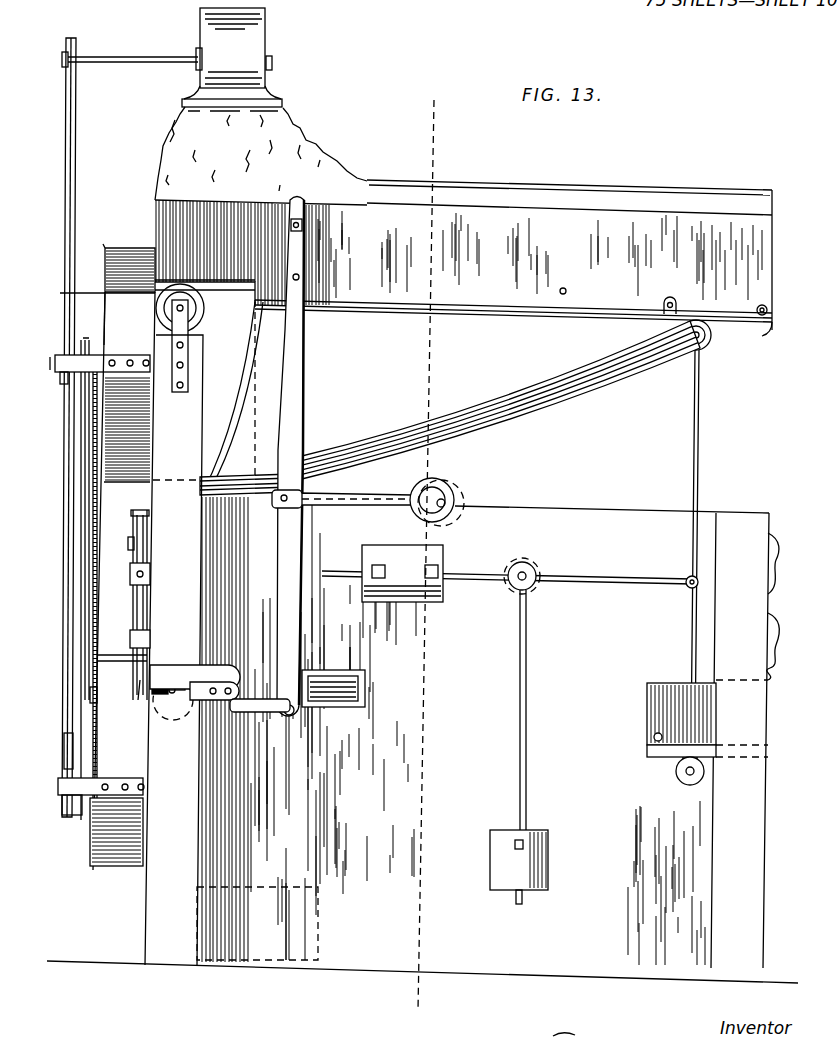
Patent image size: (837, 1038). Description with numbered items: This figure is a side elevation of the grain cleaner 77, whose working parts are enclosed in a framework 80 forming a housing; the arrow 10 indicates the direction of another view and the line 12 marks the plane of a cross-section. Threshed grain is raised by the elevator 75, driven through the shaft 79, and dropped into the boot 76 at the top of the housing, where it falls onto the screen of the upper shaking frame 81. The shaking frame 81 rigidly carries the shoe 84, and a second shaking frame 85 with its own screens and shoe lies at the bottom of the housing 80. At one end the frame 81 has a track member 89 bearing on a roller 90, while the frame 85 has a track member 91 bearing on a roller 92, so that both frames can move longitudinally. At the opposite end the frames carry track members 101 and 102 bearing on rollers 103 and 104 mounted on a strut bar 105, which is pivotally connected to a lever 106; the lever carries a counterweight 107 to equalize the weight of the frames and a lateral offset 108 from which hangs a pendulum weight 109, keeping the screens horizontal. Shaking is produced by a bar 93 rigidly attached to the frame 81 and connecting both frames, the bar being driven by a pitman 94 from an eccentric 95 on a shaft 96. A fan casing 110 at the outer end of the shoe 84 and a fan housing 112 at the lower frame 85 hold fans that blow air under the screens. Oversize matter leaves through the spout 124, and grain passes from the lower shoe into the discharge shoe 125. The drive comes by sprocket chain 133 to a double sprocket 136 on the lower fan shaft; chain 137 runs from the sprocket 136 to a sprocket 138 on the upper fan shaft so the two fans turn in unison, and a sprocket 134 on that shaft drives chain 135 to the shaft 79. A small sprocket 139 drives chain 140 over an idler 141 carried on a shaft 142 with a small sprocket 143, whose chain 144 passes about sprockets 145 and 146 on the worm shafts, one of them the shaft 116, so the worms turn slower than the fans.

The direction arrow 10 is at (80, 903).
The section line 12 is at (415, 1005).
The elevator 75 is at (266, 16).
The boot 76 is at (265, 218).
The cleaner 77 is at (548, 190).
The shaft 79 is at (128, 60).
The framework 80 is at (143, 905).
The shaking frame 81 is at (540, 257).
The shoe 84 is at (542, 412).
The second shaking frame 85 is at (660, 716).
The track member 89 is at (87, 299).
The roller 90 is at (205, 318).
The track member 91 is at (208, 682).
The roller 92 is at (162, 674).
The bar 93 is at (304, 428).
The pitman 94 is at (342, 508).
The eccentric 95 is at (435, 487).
The shaft 96 is at (450, 500).
The track member 101 is at (738, 318).
The track member 102 is at (660, 758).
The roller 103 is at (681, 338).
The roller 104 is at (686, 782).
The strut bar 105 is at (700, 468).
The lever 106 is at (604, 586).
The counterweight 107 is at (408, 605).
The lateral offset 108 is at (520, 730).
The pendulum weight 109 is at (548, 868).
The fan casing 110 is at (123, 246).
The fan housing 112 is at (90, 843).
The shaft 116 is at (777, 563).
The spout 124 is at (344, 708).
The discharge shoe 125 is at (330, 932).
The sprocket chain 133 is at (64, 752).
The sprocket 134 is at (60, 380).
The sprocket chain 135 is at (66, 262).
The double sprocket 136 is at (72, 813).
The sprocket chain 137 is at (80, 630).
The sprocket 138 is at (84, 338).
The small sprocket 139 is at (108, 352).
The sprocket chain 140 is at (98, 522).
The idler 141 is at (97, 690).
The shaft 142 is at (122, 670).
The small sprocket 143 is at (143, 690).
The chain 144 is at (150, 562).
The sprocket 145 is at (150, 530).
The sprocket 146 is at (146, 622).